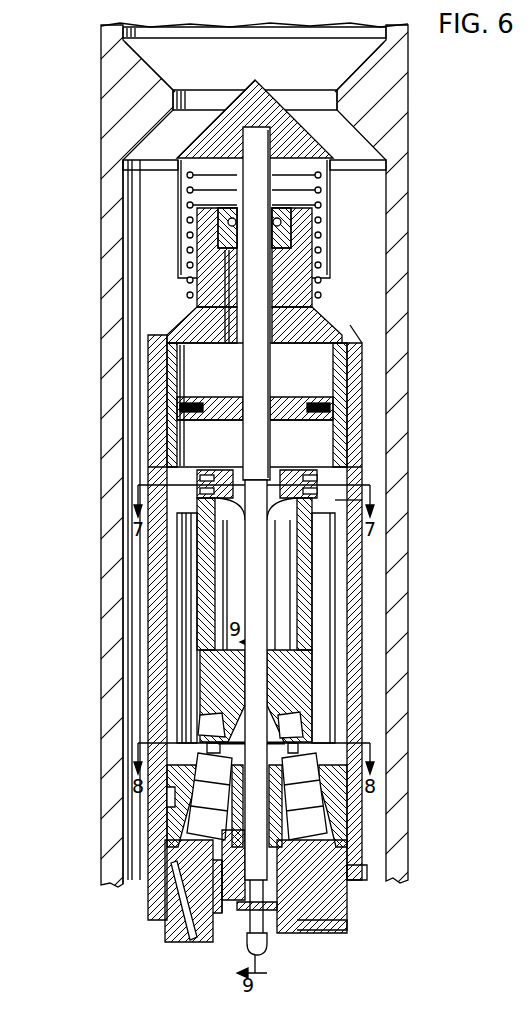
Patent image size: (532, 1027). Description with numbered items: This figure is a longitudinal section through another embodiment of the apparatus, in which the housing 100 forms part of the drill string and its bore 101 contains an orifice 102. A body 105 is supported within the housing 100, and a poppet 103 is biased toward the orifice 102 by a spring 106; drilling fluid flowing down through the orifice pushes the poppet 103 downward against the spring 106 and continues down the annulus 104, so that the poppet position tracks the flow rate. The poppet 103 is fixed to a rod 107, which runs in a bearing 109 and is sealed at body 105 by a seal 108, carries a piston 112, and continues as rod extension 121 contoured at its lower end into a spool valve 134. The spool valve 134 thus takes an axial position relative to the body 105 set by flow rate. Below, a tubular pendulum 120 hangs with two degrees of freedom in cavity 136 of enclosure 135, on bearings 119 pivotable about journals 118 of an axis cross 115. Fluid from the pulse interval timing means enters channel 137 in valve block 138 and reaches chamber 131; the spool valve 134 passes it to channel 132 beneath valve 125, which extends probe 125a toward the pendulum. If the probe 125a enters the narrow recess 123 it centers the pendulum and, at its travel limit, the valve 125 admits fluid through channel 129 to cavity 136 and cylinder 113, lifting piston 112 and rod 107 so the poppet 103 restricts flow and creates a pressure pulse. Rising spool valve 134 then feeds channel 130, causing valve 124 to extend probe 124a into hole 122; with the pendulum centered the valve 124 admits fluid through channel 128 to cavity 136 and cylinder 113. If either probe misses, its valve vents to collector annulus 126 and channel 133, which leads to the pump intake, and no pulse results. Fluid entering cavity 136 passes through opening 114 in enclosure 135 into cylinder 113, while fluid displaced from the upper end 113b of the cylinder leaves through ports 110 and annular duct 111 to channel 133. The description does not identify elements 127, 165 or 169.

The housing 100 is at (410, 86).
The bore 101 is at (322, 40).
The orifice 102 is at (290, 96).
The poppet 103 is at (323, 150).
The annulus 104 is at (386, 345).
The body 105 is at (345, 375).
The spring 106 is at (318, 193).
The rod 107 is at (272, 313).
The seal 108 is at (282, 222).
The bearing 109 is at (222, 233).
The ports 110 is at (208, 383).
The annular duct 111 is at (170, 383).
The piston 112 is at (230, 410).
The cylinder 113 is at (213, 442).
The upper end of cylinder 113b is at (170, 358).
The opening 114 is at (195, 478).
The axis cross 115 is at (295, 466).
The journals 118 is at (310, 485).
The bearings 119 is at (335, 505).
The tubular pendulum 120 is at (312, 563).
The rod extension 121 is at (285, 596).
The hole 122 is at (297, 727).
The recess 123 is at (213, 725).
The valve 124 is at (300, 766).
The probe 124a is at (292, 752).
The valve 125 is at (208, 768).
The probe 125a is at (218, 750).
The collector annulus 126 is at (175, 800).
The bottom body 127 is at (172, 872).
The channel 128 is at (280, 820).
The channel 129 is at (230, 820).
The channel 130 is at (337, 873).
The chamber 131 is at (275, 879).
The channel 132 is at (230, 907).
The channel 133 is at (180, 902).
The spool valve 134 is at (262, 914).
The enclosure 135 is at (343, 624).
The cavity 136 is at (190, 562).
The channel 137 is at (293, 920).
The valve block 138 is at (347, 930).
The element 165 is at (531, 979).
The element 169 is at (531, 1012).